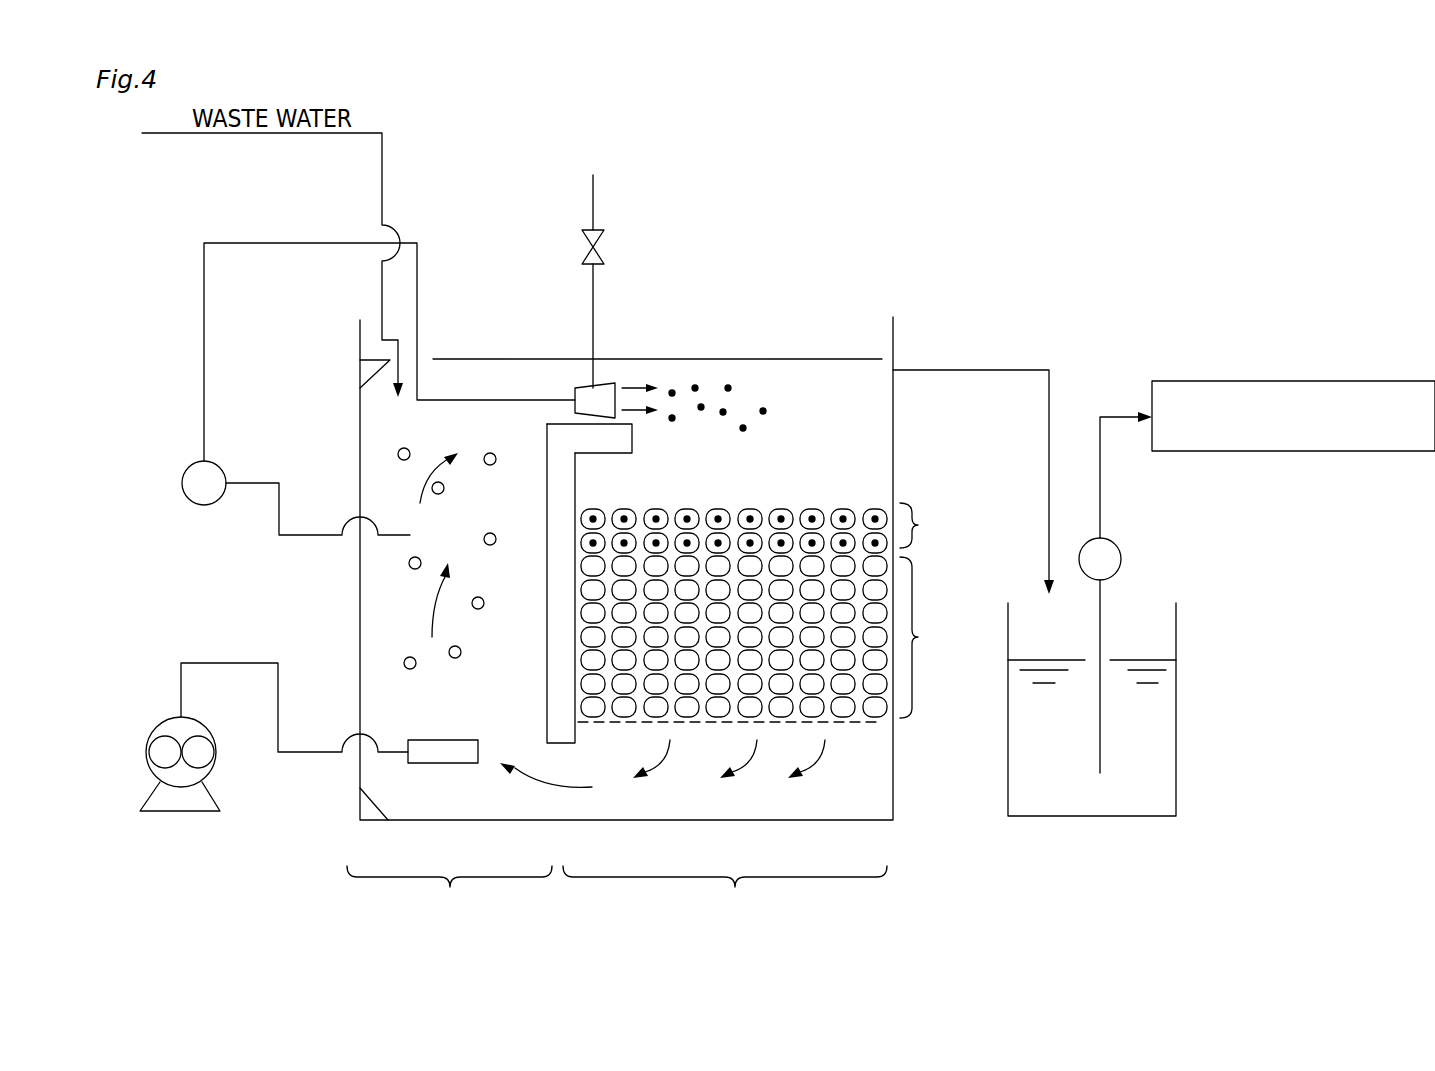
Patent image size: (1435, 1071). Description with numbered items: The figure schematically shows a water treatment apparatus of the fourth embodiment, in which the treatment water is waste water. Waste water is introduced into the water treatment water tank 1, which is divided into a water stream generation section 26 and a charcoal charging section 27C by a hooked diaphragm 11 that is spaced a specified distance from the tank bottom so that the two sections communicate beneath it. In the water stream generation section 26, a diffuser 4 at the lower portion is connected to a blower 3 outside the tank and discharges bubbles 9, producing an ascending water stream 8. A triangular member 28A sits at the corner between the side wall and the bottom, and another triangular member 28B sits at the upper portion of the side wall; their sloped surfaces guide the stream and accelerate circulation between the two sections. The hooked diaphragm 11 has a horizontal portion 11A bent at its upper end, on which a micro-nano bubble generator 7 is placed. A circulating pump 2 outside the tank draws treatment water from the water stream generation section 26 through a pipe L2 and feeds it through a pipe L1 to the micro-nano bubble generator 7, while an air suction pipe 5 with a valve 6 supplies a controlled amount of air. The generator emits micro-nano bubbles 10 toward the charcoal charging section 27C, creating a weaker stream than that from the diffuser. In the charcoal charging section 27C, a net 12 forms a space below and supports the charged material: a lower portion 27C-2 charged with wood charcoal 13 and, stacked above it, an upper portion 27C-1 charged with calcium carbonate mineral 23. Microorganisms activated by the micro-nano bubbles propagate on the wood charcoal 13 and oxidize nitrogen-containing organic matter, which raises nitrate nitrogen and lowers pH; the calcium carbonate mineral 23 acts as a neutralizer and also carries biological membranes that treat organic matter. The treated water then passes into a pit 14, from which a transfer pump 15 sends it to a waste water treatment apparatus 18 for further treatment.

The water treatment water tank 1 is at (344, 690).
The circulating pump 2 is at (203, 505).
The blower 3 is at (160, 722).
The diffuser 4 is at (450, 763).
The air suction pipe 5 is at (595, 193).
The valve 6 is at (600, 258).
The micro-nano bubble generator 7 is at (605, 385).
The water stream 8 is at (420, 503).
The bubbles 9 is at (409, 563).
The micro-nano bubbles 10 is at (728, 388).
The hooked diaphragm 11 is at (550, 450).
The horizontal portion 11A is at (608, 447).
The net 12 is at (880, 722).
The wood charcoal 13 is at (875, 710).
The pit 14 is at (1190, 690).
The transfer pump 15 is at (1122, 559).
The waste water treatment apparatus 18 is at (1196, 381).
The calcium carbonate mineral 23 is at (812, 513).
The water stream generation section 26 is at (449, 896).
The charcoal charging section 27C is at (725, 896).
The upper portion 27C-1 is at (949, 525).
The lower portion 27C-2 is at (949, 637).
The triangular member 28A is at (356, 808).
The triangular member 28B is at (362, 372).
The pipe L1 is at (243, 243).
The pipe L2 is at (250, 483).